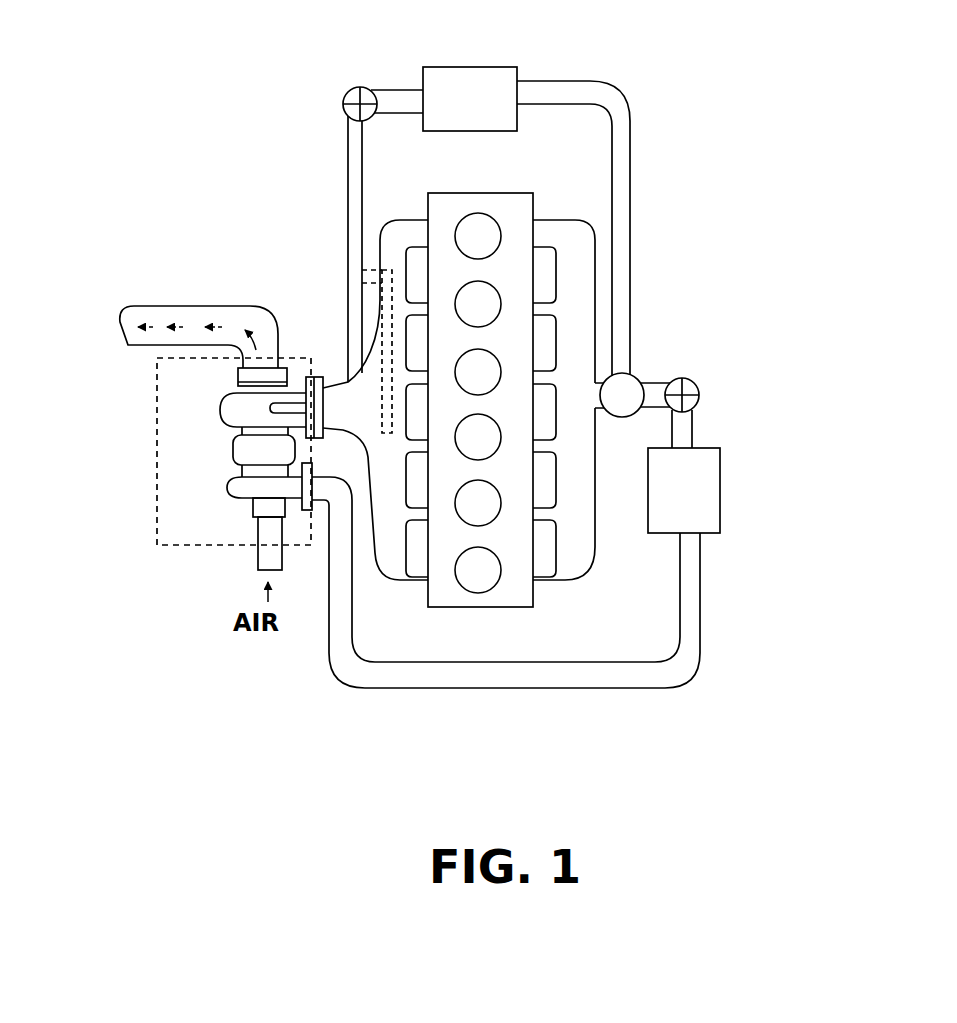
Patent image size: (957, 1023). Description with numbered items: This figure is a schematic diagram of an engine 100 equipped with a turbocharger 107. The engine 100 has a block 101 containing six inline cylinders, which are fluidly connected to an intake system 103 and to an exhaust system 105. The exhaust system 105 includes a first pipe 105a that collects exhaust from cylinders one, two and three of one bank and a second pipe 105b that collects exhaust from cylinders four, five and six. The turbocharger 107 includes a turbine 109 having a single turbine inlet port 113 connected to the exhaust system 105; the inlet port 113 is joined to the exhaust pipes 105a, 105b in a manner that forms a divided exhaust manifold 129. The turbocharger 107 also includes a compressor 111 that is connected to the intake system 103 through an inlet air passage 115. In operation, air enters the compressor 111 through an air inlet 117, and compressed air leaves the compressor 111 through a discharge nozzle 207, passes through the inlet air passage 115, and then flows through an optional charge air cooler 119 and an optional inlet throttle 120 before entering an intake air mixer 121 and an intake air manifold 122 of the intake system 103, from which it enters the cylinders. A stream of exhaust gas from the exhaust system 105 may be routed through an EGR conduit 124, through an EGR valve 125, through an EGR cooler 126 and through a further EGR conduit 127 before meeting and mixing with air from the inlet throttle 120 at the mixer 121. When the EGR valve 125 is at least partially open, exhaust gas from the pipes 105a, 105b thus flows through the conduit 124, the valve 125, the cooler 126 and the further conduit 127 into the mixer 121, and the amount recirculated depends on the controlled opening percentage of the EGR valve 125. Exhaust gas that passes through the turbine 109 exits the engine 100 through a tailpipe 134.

The engine 100 is at (647, 185).
The block 101 is at (448, 193).
The intake system 103 is at (563, 214).
The exhaust system 105 is at (389, 226).
The first pipe 105a is at (386, 583).
The second pipe 105b is at (374, 313).
The turbocharger 107 is at (157, 440).
The turbine 109 is at (217, 409).
The compressor 111 is at (223, 496).
The turbine inlet port 113 is at (328, 378).
The inlet air passage 115 is at (513, 688).
The air inlet 117 is at (283, 515).
The charge air cooler 119 is at (720, 507).
The inlet throttle 120 is at (683, 378).
The intake air mixer 121 is at (636, 373).
The intake air manifold 122 is at (595, 517).
The EGR conduit 124 is at (346, 190).
The EGR valve 125 is at (361, 87).
The EGR cooler 126 is at (483, 67).
The further EGR conduit 127 is at (596, 81).
The divided exhaust manifold 129 is at (334, 376).
The tailpipe 134 is at (140, 304).
The discharge nozzle 207 is at (312, 512).